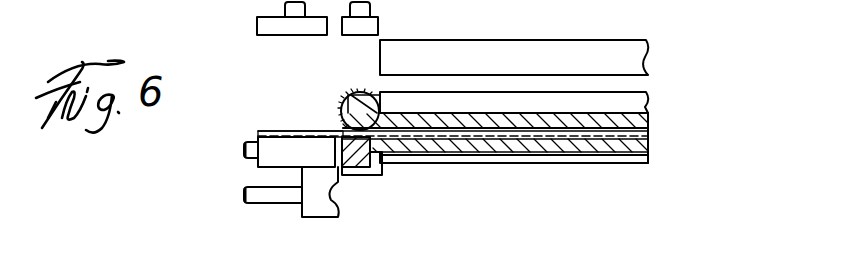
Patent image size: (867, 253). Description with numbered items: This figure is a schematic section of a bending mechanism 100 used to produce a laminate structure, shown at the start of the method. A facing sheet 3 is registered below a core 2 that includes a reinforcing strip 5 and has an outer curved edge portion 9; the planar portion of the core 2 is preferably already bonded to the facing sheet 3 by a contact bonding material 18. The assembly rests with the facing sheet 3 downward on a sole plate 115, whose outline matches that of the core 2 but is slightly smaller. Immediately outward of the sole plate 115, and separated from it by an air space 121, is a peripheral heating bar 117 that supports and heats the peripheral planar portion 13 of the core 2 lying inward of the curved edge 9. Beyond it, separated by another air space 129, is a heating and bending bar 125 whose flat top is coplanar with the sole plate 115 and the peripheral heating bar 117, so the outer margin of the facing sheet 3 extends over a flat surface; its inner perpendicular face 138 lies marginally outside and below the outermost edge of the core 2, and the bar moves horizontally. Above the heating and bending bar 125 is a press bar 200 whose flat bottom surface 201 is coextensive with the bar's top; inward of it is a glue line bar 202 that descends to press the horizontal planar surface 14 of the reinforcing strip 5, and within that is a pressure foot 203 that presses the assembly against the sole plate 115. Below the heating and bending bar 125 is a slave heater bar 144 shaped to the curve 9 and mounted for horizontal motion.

The core 2 is at (650, 96).
The facing sheet 3 is at (650, 136).
The reinforcing strip 5 is at (358, 105).
The outer curved edge portion 9 is at (340, 110).
The peripheral planar portion 13 is at (368, 130).
The horizontal planar surface 14 is at (373, 97).
The contact bonding material 18 is at (478, 128).
The bending mechanism 100 is at (652, 173).
The sole plate 115 is at (512, 150).
The peripheral heating bar 117 is at (355, 160).
The air space 121 is at (382, 166).
The heating and bending bar 125 is at (270, 145).
The air space 129 is at (338, 150).
The inner perpendicular face 138 is at (338, 133).
The slave heater bar 144 is at (312, 210).
The press bar 200 is at (268, 23).
The flat bottom surface 201 is at (283, 40).
The glue line bar 202 is at (372, 25).
The pressure foot 203 is at (622, 60).